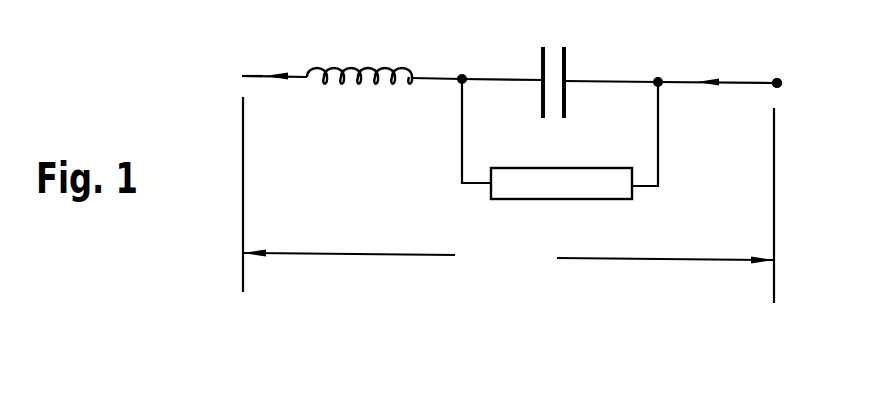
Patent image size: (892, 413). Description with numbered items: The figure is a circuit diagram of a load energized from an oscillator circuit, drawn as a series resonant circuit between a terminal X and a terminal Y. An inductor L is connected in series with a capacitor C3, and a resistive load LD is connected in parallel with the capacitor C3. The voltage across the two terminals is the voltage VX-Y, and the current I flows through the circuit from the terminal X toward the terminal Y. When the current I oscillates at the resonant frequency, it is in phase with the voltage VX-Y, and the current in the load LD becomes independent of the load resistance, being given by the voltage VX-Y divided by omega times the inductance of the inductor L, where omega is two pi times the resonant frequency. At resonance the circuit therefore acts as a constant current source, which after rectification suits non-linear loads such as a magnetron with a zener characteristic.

The terminal Y is at (246, 55).
The terminal X is at (773, 67).
The inductor L is at (359, 102).
The capacitor C3 is at (573, 77).
The current I is at (483, 80).
The resistive load LD is at (598, 199).
The voltage V X-Y VX-Y is at (508, 200).